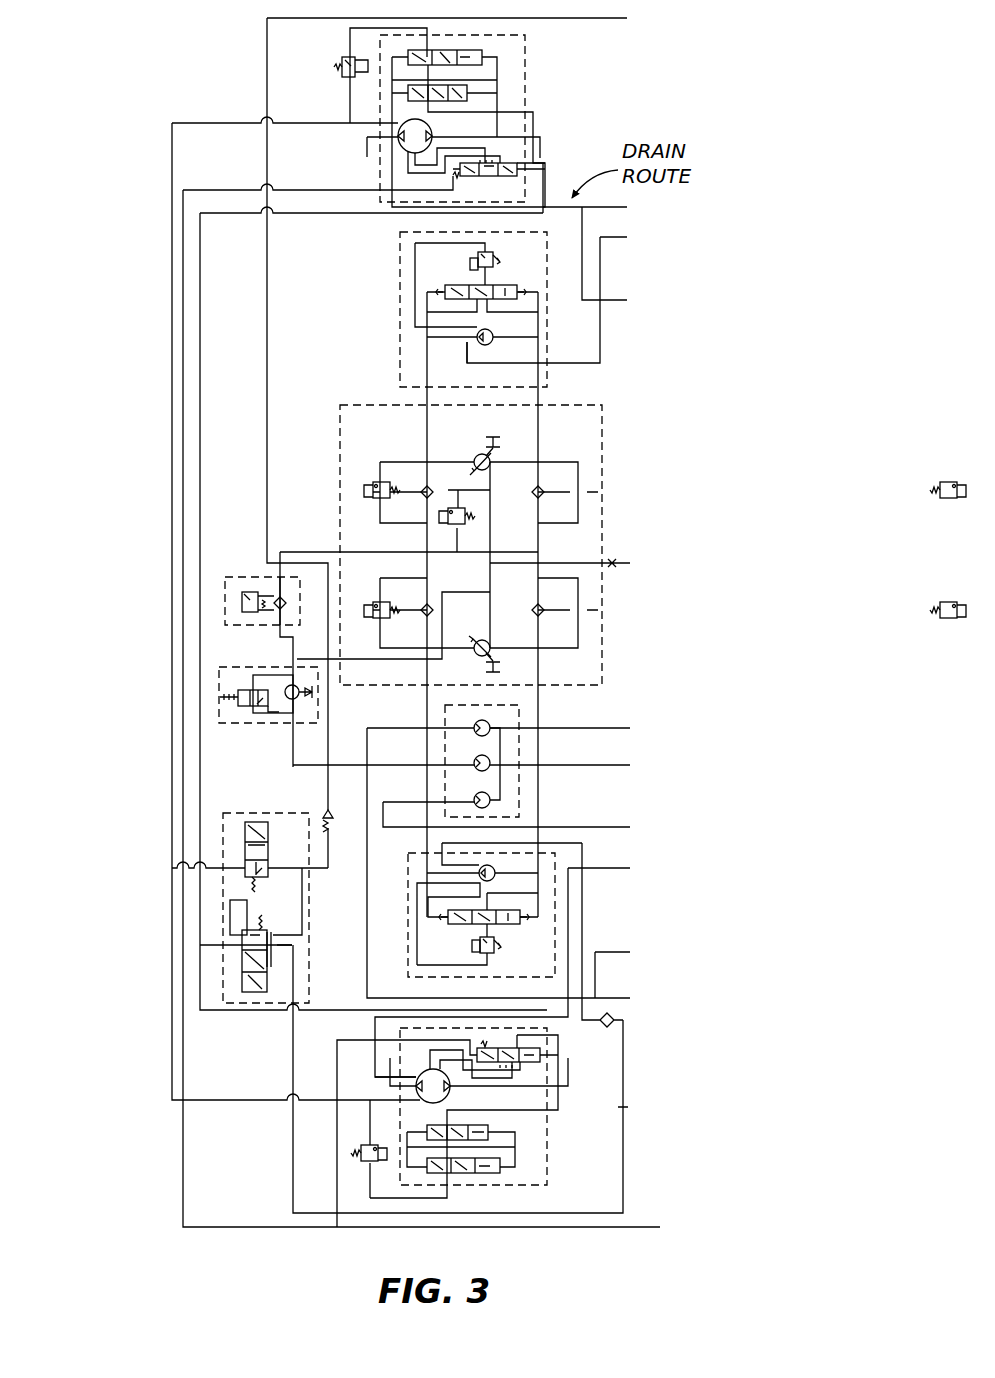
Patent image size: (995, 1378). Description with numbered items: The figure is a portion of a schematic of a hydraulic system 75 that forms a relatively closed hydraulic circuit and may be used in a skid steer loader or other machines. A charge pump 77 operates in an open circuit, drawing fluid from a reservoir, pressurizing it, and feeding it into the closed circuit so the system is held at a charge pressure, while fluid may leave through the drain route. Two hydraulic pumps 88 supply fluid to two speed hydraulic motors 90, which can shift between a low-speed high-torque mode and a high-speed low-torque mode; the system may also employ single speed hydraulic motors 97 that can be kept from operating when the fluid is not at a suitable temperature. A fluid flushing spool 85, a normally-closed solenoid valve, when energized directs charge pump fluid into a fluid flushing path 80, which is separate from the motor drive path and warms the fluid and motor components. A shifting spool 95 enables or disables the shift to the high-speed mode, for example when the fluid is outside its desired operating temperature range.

The hydraulic system 75 is at (124, 657).
The two speed hydraulic motors 90 is at (570, 100).
The fluid flushing path 80 is at (364, 130).
The single speed hydraulic motors 97 is at (377, 342).
The hydraulic pumps 88 is at (508, 451).
The charge pump 77 is at (498, 770).
The fluid flushing spool 85 is at (236, 848).
The shifting spool 95 is at (236, 963).